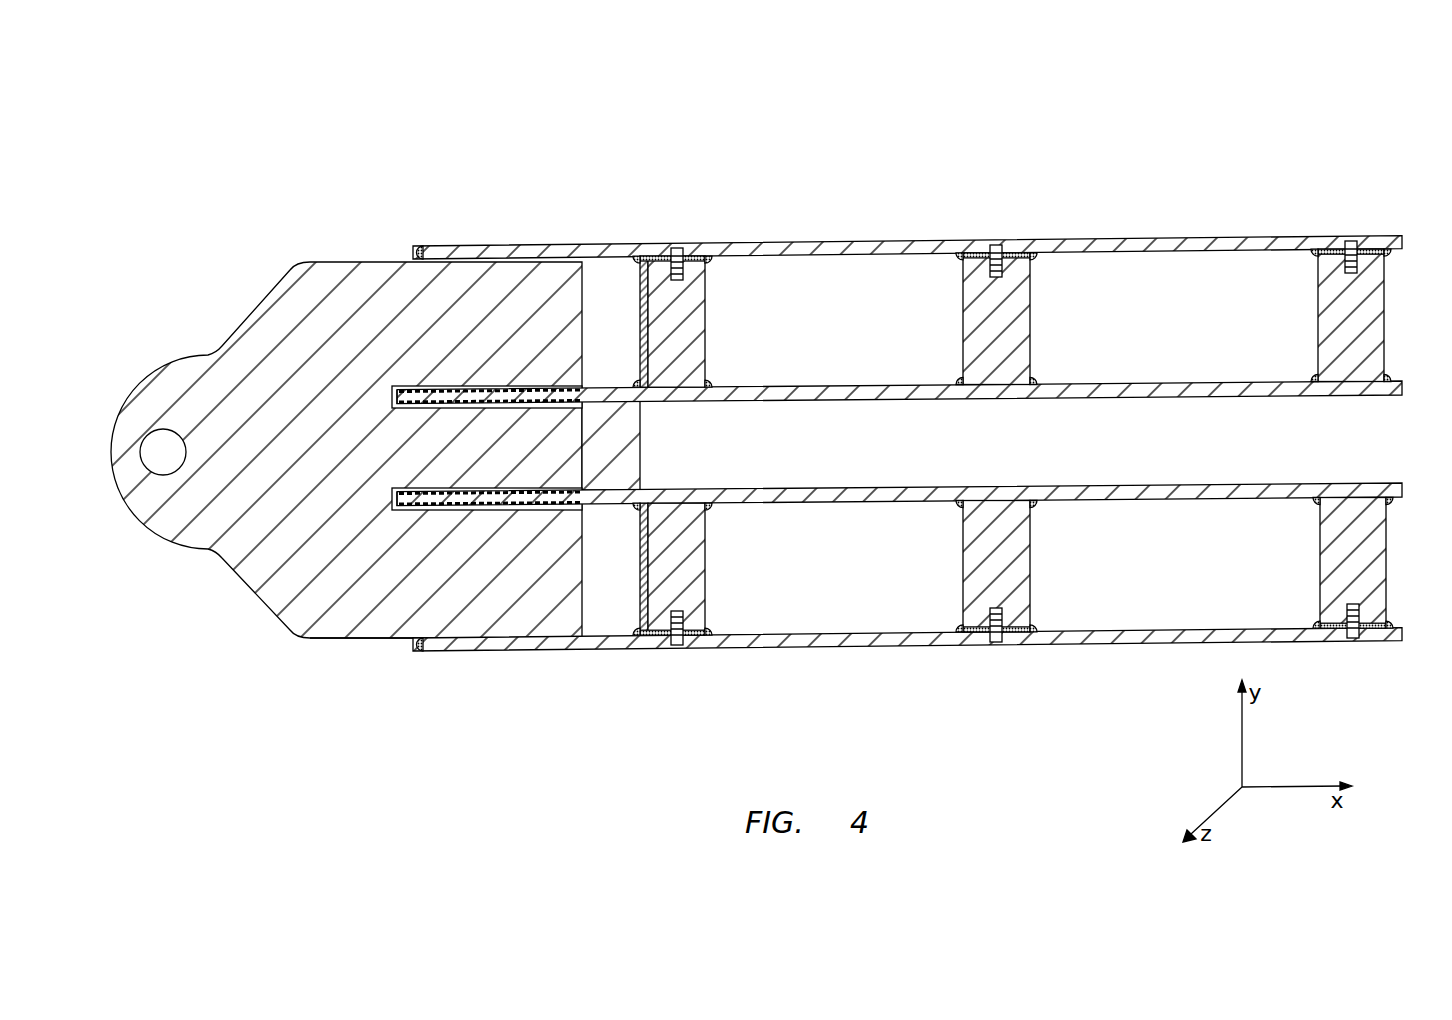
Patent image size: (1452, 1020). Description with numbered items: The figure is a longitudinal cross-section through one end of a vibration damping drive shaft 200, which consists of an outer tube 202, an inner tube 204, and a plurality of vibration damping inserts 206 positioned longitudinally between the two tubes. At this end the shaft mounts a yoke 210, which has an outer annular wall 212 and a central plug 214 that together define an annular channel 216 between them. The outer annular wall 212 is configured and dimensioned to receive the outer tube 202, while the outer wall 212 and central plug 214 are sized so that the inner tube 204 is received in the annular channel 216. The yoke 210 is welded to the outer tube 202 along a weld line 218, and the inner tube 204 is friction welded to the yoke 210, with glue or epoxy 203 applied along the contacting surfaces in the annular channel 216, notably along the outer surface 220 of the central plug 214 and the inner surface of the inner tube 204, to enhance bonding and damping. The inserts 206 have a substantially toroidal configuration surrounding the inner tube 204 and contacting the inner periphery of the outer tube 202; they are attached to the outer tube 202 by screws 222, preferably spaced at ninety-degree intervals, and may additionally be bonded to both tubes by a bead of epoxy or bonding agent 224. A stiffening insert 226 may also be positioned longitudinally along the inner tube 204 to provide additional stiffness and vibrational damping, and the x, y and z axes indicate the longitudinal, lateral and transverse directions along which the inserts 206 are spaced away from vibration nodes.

The drive shaft 200 is at (843, 165).
The outer tube 202 is at (553, 245).
The glue or epoxy 203 is at (490, 387).
The inner tube 204 is at (815, 505).
The vibration damping insert 206 is at (700, 318).
The yoke 210 is at (343, 640).
The outer annular wall 212 is at (388, 283).
The central plug 214 is at (632, 440).
The annular channel 216 is at (390, 498).
The weld line 218 is at (420, 246).
The outer surface of central plug 220 is at (640, 404).
The screw 222 is at (677, 250).
The bead of epoxy or bonding agent 224 is at (630, 256).
The stiffening insert 226 is at (640, 290).